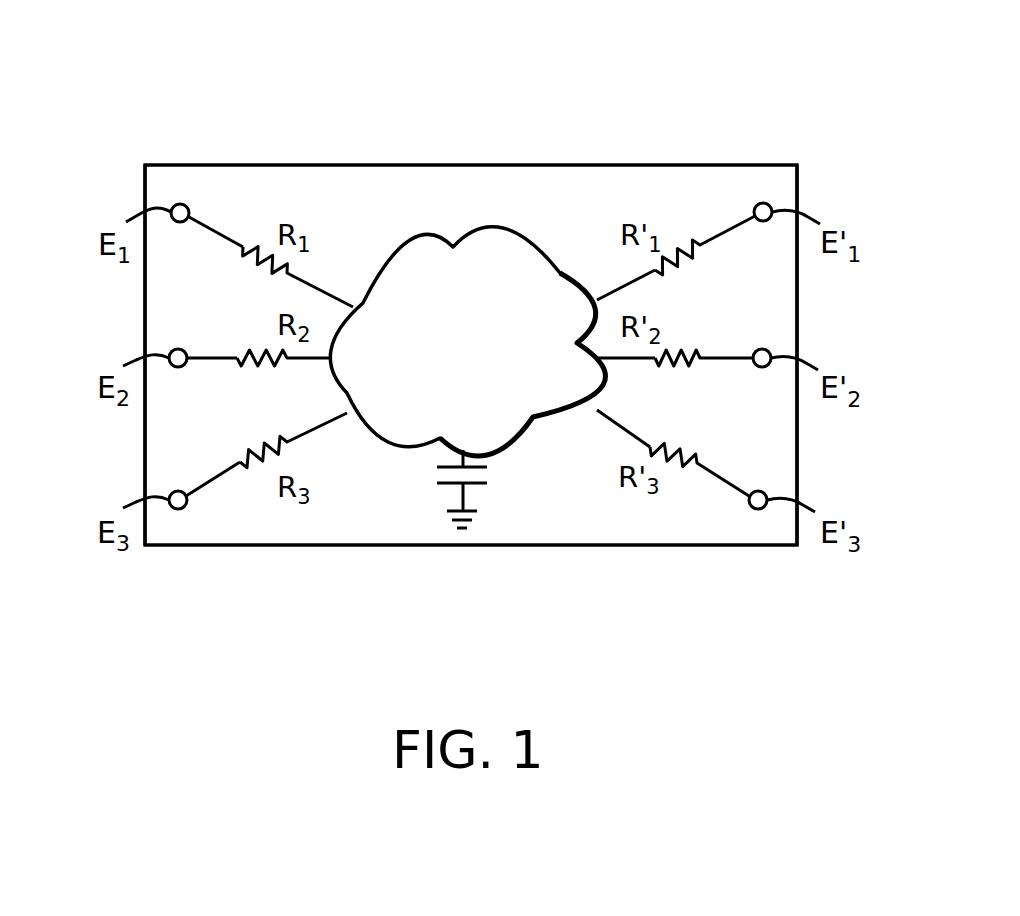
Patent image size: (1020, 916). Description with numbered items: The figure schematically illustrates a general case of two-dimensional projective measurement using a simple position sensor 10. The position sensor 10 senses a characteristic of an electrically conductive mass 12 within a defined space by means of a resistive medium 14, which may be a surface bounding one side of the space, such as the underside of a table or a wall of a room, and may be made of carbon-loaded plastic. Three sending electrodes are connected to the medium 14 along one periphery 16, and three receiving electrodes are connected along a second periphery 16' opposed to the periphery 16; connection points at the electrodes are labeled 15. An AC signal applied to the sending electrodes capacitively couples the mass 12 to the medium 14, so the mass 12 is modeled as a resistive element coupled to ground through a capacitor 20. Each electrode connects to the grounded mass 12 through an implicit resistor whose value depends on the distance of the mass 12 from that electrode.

The position sensor 10 is at (588, 80).
The electrically conductive mass 12 is at (407, 240).
The resistive medium 14 is at (575, 523).
The terminals 15 is at (770, 197).
The periphery 16 is at (114, 352).
The second periphery 16' is at (837, 355).
The capacitor 20 is at (433, 478).